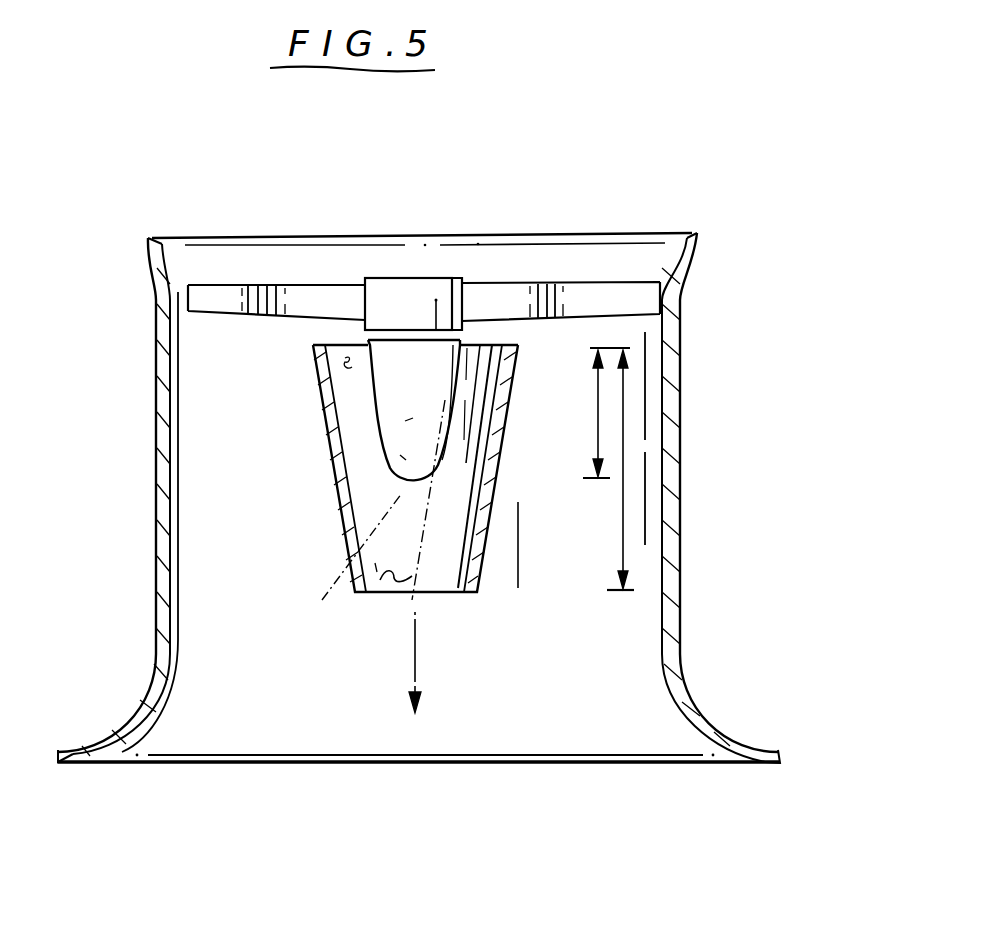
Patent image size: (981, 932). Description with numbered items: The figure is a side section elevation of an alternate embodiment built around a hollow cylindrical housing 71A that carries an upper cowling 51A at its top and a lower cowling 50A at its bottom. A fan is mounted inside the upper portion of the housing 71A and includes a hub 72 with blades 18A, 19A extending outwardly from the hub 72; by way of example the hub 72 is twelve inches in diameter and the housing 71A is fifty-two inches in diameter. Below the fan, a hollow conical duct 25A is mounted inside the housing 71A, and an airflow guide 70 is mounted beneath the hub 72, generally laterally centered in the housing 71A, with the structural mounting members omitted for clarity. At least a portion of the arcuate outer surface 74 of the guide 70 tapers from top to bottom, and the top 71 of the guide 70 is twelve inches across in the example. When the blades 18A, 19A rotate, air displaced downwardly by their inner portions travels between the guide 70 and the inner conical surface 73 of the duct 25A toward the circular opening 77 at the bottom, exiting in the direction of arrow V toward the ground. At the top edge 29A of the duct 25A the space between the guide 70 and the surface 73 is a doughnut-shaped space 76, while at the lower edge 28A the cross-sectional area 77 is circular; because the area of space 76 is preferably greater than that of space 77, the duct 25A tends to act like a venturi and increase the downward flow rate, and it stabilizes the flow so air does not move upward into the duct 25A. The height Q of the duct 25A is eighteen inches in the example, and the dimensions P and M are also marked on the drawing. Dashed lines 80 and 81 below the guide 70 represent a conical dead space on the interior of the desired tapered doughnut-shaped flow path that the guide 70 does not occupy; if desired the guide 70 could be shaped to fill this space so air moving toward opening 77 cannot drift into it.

The upper cowling 51A is at (143, 243).
The hub 72 is at (425, 290).
The blade 18A is at (190, 300).
The blade 19A is at (640, 300).
The top edge 29A is at (348, 344).
The doughnut-shaped space 76 is at (345, 362).
The top of guide 71 is at (433, 346).
The airflow guide 70 is at (413, 418).
The arcuate outer surface 74 is at (406, 460).
The inner conical surface 73 is at (375, 563).
The dashed line 80 is at (440, 495).
The hollow conical duct 25A is at (333, 523).
The dashed line 81 is at (310, 608).
The circular opening 77 is at (388, 596).
The lower edge 28A is at (430, 597).
The hollow cylindrical housing 71A is at (692, 661).
The lower cowling 50A is at (790, 762).
The dimension P is at (595, 412).
The height Q is at (623, 534).
The angle M is at (520, 566).
The arrow V is at (415, 651).